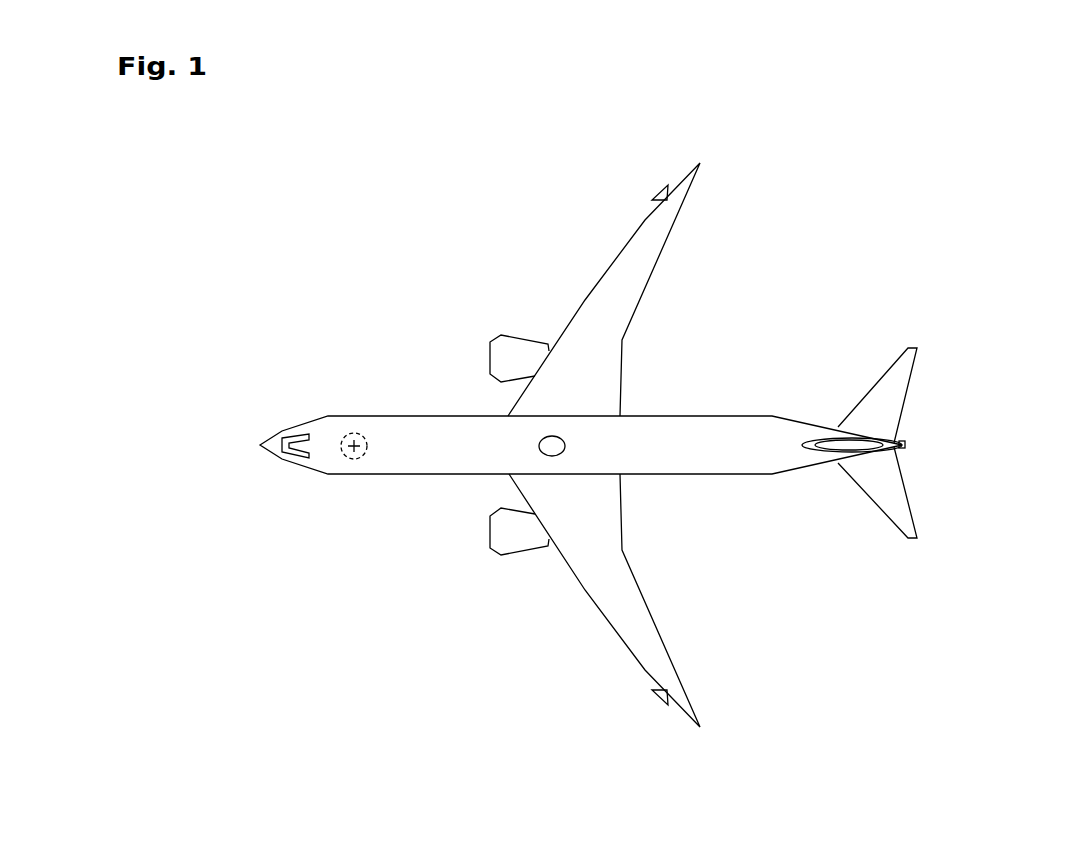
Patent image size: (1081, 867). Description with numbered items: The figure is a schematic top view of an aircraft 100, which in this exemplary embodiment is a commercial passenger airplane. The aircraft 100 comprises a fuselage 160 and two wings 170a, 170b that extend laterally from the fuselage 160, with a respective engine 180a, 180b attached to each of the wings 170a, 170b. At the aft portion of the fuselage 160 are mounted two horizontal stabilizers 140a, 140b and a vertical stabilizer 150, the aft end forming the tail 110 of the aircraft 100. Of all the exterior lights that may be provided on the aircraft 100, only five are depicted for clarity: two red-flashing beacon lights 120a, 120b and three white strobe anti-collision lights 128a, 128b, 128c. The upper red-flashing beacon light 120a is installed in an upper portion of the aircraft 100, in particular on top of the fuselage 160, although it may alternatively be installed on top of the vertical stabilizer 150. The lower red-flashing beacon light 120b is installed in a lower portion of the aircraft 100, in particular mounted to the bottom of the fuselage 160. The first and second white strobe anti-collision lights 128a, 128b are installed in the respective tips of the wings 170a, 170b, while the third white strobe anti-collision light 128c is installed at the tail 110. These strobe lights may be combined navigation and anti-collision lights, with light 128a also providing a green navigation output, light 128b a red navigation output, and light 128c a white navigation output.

The aircraft 100 is at (836, 235).
The tail 110 is at (920, 399).
The upper red-flashing beacon light 120a is at (546, 449).
The lower red-flashing beacon light 120b is at (352, 459).
The first white strobe anti-collision light 128a is at (665, 184).
The second white strobe anti-collision light 128b is at (669, 700).
The third white strobe anti-collision light 128c is at (906, 445).
The horizontal stabilizer 140a is at (907, 334).
The horizontal stabilizer 140b is at (905, 558).
The vertical stabilizer 150 is at (857, 442).
The fuselage 160 is at (710, 398).
The wing 170a is at (701, 206).
The wing 170b is at (706, 681).
The engine 180a is at (505, 318).
The engine 180b is at (507, 571).